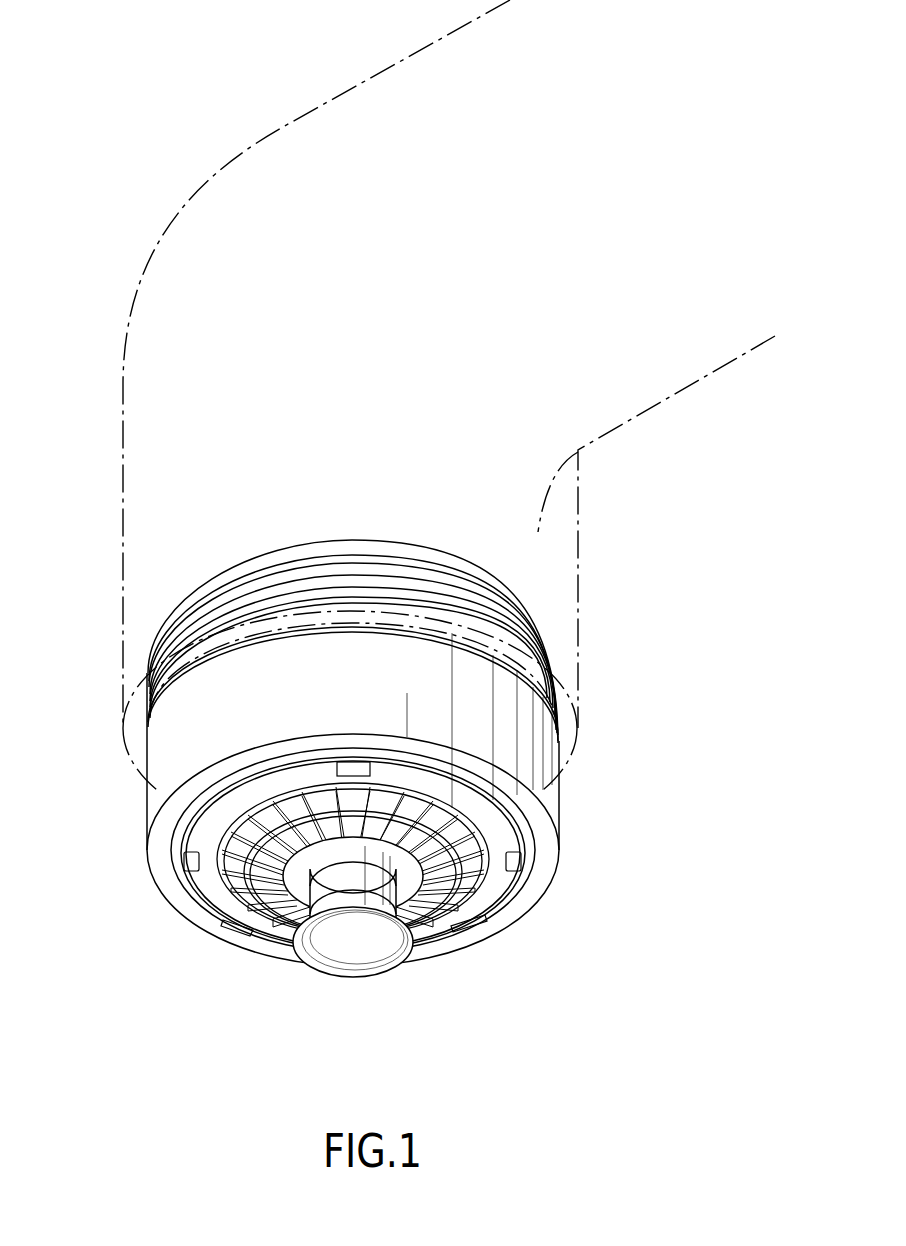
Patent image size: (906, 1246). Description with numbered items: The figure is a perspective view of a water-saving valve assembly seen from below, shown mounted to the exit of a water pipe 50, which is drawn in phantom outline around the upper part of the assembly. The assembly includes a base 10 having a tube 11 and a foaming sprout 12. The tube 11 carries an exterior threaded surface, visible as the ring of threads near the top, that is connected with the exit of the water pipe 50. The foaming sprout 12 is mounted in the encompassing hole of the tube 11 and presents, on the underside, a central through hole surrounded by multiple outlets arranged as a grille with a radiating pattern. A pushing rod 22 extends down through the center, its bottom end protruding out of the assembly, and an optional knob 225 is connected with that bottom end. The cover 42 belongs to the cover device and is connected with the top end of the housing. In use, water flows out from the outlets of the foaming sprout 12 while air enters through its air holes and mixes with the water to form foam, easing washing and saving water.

The base 10 is at (335, 741).
The tube 11 is at (162, 785).
The foaming sprout 12 is at (230, 905).
The pushing rod 22 is at (454, 907).
The cover 42 is at (328, 547).
The water pipe 50 is at (633, 397).
The knob 225 is at (380, 957).